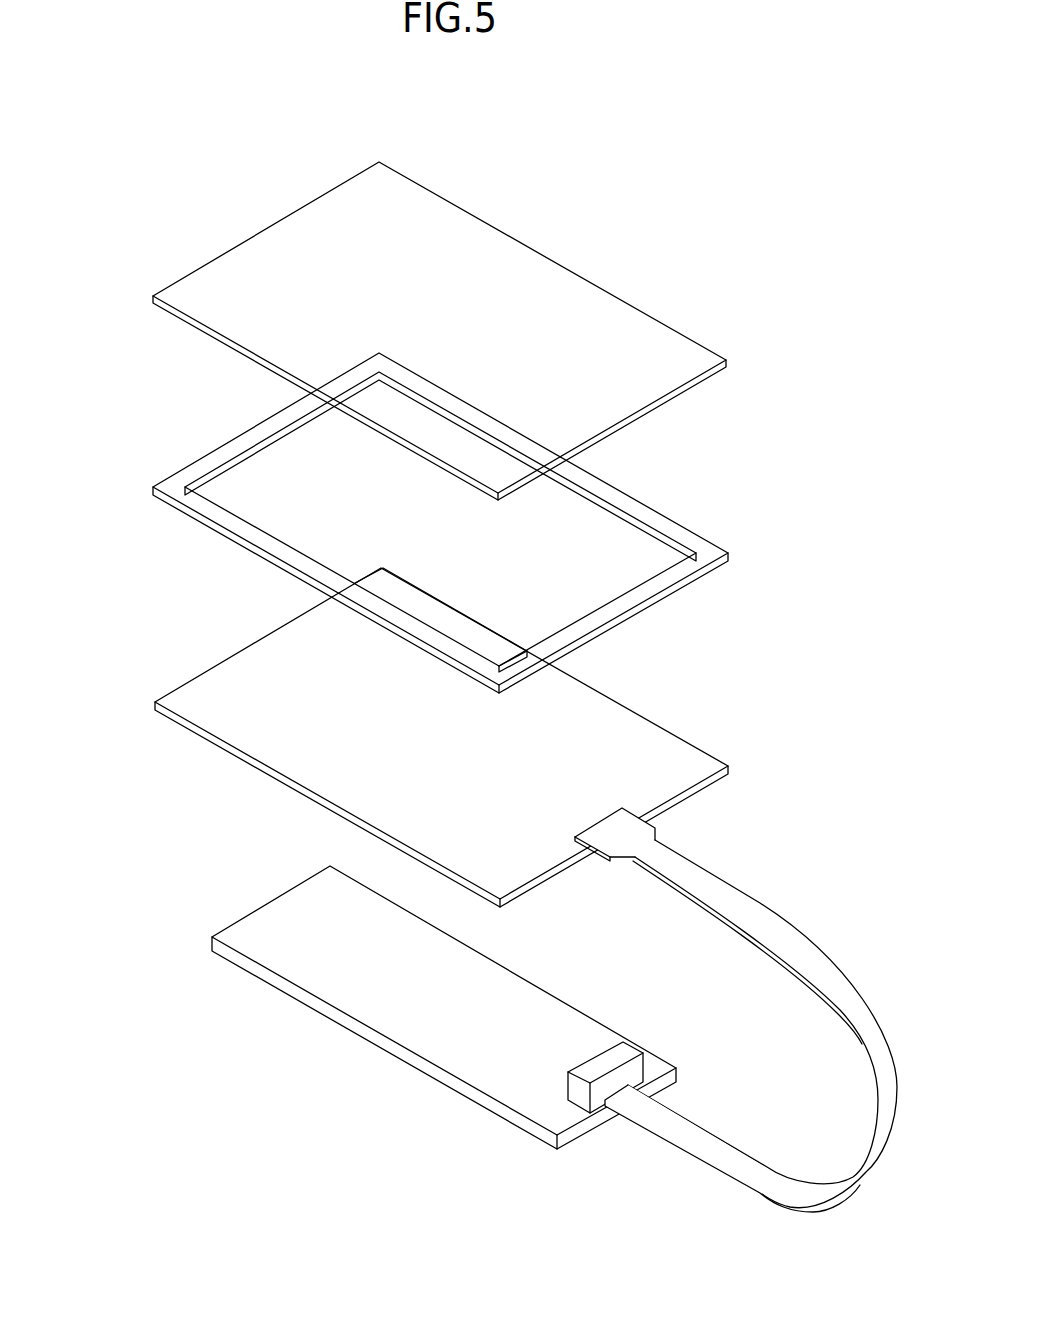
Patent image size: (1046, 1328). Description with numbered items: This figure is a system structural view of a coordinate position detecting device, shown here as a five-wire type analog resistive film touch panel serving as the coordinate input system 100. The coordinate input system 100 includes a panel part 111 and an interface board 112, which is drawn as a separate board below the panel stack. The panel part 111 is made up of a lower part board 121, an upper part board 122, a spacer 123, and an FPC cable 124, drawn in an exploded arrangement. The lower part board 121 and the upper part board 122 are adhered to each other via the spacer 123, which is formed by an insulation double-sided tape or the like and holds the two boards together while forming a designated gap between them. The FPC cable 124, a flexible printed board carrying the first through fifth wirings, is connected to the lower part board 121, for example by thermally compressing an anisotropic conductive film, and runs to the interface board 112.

The coordinate input system 100 is at (131, 166).
The panel part 111 is at (87, 320).
The interface board 112 is at (230, 920).
The lower part board 121 is at (180, 680).
The upper part board 122 is at (177, 322).
The spacer 123 is at (177, 457).
The FPC cable 124 is at (823, 988).